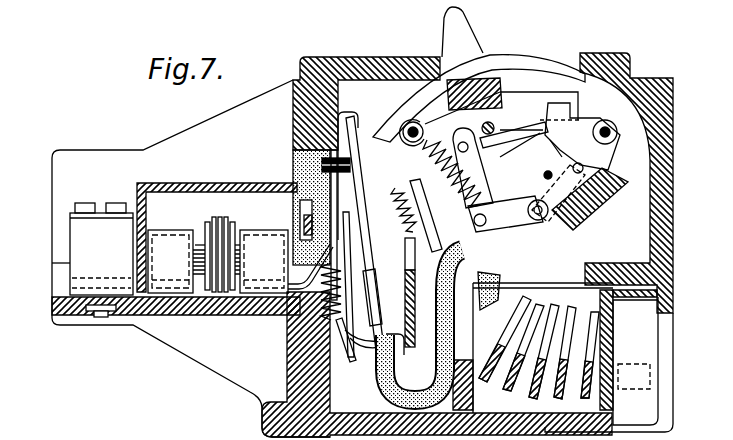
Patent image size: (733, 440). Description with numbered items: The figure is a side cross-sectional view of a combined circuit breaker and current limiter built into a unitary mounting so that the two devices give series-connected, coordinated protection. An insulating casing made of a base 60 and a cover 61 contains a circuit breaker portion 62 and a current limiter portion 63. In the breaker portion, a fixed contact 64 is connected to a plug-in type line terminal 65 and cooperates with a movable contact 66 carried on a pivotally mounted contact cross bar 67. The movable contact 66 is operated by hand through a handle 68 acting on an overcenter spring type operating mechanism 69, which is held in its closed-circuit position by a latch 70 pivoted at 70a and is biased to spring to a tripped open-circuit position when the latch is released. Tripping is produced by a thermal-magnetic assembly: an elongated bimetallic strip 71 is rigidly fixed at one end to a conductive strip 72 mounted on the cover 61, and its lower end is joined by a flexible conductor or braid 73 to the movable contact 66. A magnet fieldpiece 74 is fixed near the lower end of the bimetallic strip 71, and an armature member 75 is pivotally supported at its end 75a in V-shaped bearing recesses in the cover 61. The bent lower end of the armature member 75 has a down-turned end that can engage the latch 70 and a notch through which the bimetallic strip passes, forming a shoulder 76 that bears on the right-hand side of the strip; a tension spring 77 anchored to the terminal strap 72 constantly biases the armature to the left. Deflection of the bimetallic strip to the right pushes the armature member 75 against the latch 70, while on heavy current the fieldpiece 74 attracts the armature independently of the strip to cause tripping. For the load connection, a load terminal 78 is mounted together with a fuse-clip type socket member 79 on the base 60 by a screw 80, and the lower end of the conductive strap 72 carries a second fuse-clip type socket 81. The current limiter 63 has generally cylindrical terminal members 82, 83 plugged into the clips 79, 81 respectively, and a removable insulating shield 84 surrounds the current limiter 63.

The base 60 is at (675, 300).
The cover 61 is at (655, 143).
The circuit breaker portion 62 is at (648, 210).
The current limiter portion 63 is at (219, 210).
The fixed contact 64 is at (588, 325).
The line terminal 65 is at (651, 347).
The movable contact 66 is at (484, 312).
The contact cross bar 67 is at (592, 212).
The handle 68 is at (460, 37).
The operating mechanism 69 is at (516, 181).
The latch 70 is at (410, 180).
The latch pivot 70a is at (468, 214).
The bimetallic strip 71 is at (365, 206).
The conductive strip 72 is at (362, 112).
The flexible electrical conductor 73 is at (390, 385).
The magnet fieldpiece 74 is at (382, 280).
The armature member 75 is at (358, 338).
The armature end 75a is at (350, 220).
The shoulder 76 is at (398, 328).
The tension spring 77 is at (292, 325).
The load terminal 78 is at (73, 233).
The fuse-clip type socket member 79 is at (180, 269).
The screw 80 is at (93, 318).
The fuse-clip type socket 81 is at (273, 269).
The terminal member 82 is at (200, 240).
The terminal member 83 is at (238, 240).
The insulating shield 84 is at (179, 184).